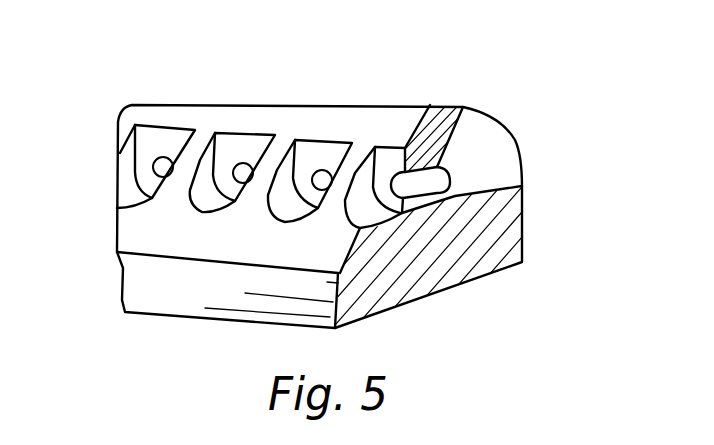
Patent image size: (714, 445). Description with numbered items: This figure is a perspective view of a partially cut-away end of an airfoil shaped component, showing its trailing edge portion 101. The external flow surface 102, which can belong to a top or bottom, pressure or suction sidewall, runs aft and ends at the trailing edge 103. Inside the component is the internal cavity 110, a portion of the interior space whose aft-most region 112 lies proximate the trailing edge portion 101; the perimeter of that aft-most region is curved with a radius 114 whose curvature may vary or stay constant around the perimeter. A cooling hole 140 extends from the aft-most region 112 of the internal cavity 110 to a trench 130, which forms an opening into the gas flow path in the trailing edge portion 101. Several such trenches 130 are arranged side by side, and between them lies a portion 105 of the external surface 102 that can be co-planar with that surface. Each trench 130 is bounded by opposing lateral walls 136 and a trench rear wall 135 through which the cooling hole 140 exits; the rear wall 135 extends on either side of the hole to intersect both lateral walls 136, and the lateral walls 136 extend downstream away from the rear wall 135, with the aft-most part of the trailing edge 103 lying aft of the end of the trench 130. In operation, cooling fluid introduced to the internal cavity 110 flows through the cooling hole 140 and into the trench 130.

The trailing edge portion 101 is at (370, 277).
The external flow surface 102 is at (149, 113).
The trailing edge 103 is at (137, 285).
The portion of the external surface 105 is at (197, 126).
The internal cavity 110 is at (500, 138).
The aft-most region 112 is at (470, 187).
The radius 114 is at (445, 160).
The trench 130 is at (283, 207).
The trench rear wall 135 is at (322, 170).
The lateral walls 136 is at (280, 157).
The cooling hole 140 is at (314, 162).